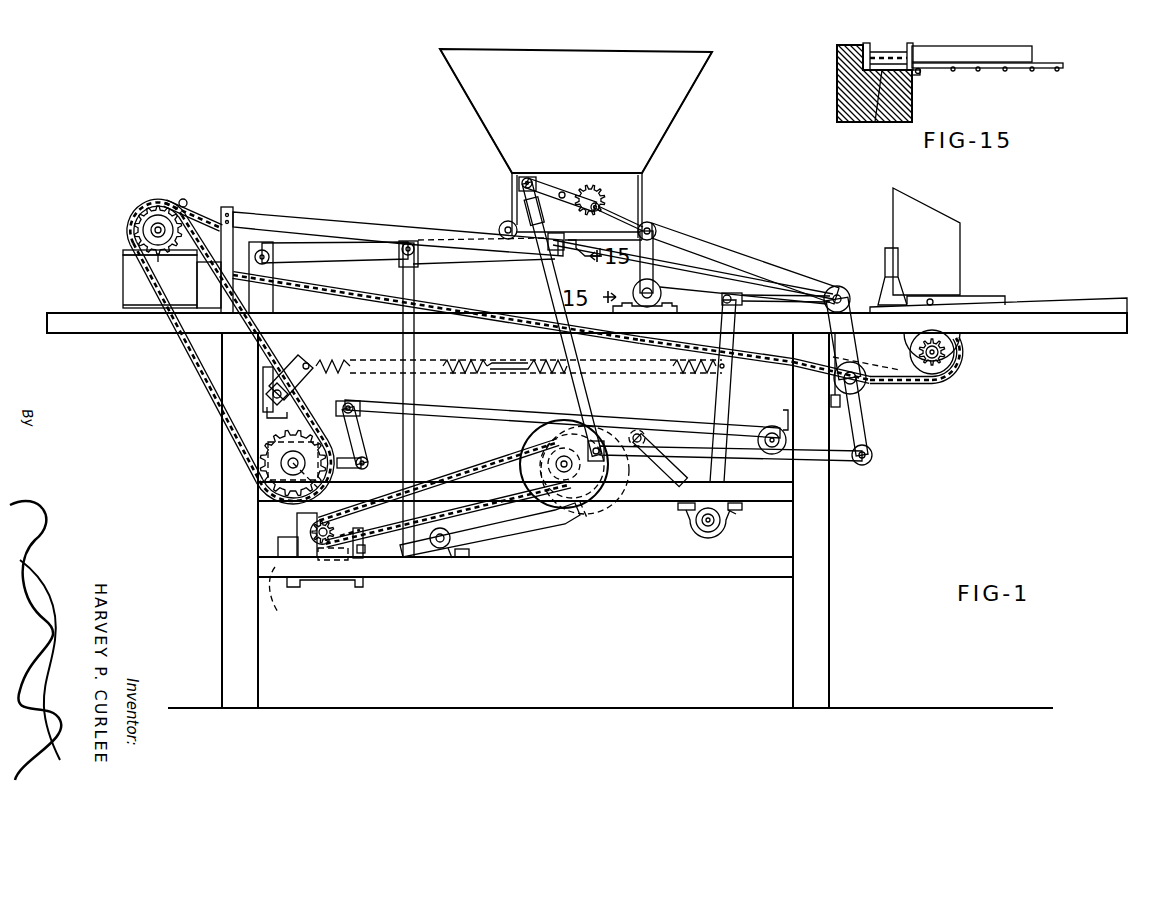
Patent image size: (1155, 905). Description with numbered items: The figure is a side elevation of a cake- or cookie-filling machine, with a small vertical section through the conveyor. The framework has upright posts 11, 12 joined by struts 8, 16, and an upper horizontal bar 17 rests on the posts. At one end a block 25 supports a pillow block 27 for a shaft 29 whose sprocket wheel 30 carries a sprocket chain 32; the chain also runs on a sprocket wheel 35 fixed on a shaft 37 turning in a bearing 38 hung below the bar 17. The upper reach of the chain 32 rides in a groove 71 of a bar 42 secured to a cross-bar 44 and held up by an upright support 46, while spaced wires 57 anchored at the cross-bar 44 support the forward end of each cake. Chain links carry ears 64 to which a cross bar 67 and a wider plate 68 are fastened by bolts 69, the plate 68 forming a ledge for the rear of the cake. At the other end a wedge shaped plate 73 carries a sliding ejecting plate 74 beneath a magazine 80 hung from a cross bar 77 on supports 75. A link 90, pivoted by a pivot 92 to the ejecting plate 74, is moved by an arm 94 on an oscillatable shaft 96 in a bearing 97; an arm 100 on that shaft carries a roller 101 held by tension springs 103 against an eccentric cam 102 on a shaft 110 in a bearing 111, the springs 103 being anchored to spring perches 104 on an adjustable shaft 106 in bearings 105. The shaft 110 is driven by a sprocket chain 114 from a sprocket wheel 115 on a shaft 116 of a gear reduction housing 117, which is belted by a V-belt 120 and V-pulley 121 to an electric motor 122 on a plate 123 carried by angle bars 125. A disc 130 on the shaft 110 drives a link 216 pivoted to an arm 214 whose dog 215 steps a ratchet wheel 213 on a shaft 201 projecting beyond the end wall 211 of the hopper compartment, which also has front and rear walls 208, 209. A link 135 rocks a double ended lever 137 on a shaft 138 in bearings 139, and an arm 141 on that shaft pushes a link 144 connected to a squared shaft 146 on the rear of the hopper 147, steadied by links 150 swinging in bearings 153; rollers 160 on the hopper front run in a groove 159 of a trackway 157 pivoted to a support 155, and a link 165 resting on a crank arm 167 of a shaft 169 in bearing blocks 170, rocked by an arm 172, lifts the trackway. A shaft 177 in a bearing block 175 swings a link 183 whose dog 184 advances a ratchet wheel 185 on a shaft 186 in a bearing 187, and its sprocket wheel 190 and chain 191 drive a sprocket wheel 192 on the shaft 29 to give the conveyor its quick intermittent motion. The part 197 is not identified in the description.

In FIG. 1, the strut 8 is at (652, 493).
In FIG. 1, the upright post 11 is at (222, 612).
In FIG. 1, the upright post 12 is at (830, 548).
In FIG. 1, the strut 16 is at (668, 572).
In FIG. 1, the upper horizontal bar 17 is at (68, 316).
In FIG. 1, the block 25 is at (125, 266).
In FIG. 1, the pillow block 27 is at (127, 250).
In FIG. 1, the shaft 29 is at (146, 218).
In FIG. 1, the sprocket wheel 30 is at (182, 202).
In FIG. 1, the sprocket chain 32 is at (200, 210).
In FIG. 15, the sprocket chain 32 is at (877, 44).
In FIG. 1, the sprocket wheel 35 is at (942, 392).
In FIG. 1, the shaft 37 is at (918, 355).
In FIG. 1, the bearing 38 is at (962, 357).
In FIG. 1, the bar 42 is at (280, 224).
In FIG. 15, the bar 42 is at (837, 100).
In FIG. 1, the cross-bar 44 is at (228, 209).
In FIG. 1, the upright support 46 is at (222, 262).
In FIG. 15, the wires 57 is at (955, 72).
In FIG. 15, the ears 64 is at (920, 74).
In FIG. 15, the cross bar 67 is at (1030, 53).
In FIG. 15, the plate 68 is at (1064, 67).
In FIG. 15, the bolts 69 is at (917, 77).
In FIG. 15, the groove 71 is at (879, 124).
In FIG. 1, the wedge shaped plate 73 is at (1048, 306).
In FIG. 1, the ejecting plate 74 is at (1000, 297).
In FIG. 1, the support 75 is at (896, 276).
In FIG. 1, the cross bar 77 is at (884, 264).
In FIG. 1, the magazine 80 is at (960, 255).
In FIG. 1, the link 90 is at (838, 286).
In FIG. 1, the pivot 92 is at (928, 299).
In FIG. 1, the arm 94 is at (728, 396).
In FIG. 1, the oscillatable shaft 96 is at (700, 522).
In FIG. 1, the bearing 97 is at (730, 514).
In FIG. 1, the arm 100 is at (656, 466).
In FIG. 1, the roller 101 is at (639, 430).
In FIG. 1, the eccentric cam 102 is at (594, 500).
In FIG. 1, the tension springs 103 is at (444, 364).
In FIG. 1, the spring perches 104 is at (306, 360).
In FIG. 1, the bearings 105 is at (264, 380).
In FIG. 1, the shaft 106 is at (268, 396).
In FIG. 1, the shaft 110 is at (562, 455).
In FIG. 1, the bearing 111 is at (518, 466).
In FIG. 1, the sprocket chain 114 is at (452, 474).
In FIG. 1, the sprocket wheel 115 is at (356, 526).
In FIG. 1, the shaft 116 is at (338, 554).
In FIG. 1, the gear reduction housing 117 is at (324, 518).
In FIG. 1, the V-belt 120 is at (358, 575).
In FIG. 1, the V-pulley 121 is at (378, 572).
In FIG. 1, the electric motor 122 is at (297, 532).
In FIG. 1, the plate 123 is at (276, 604).
In FIG. 1, the angle bars 125 is at (324, 586).
In FIG. 1, the disc 130 is at (588, 512).
In FIG. 1, the link 135 is at (842, 462).
In FIG. 1, the double ended lever 137 is at (868, 440).
In FIG. 1, the shaft 138 is at (862, 385).
In FIG. 1, the bearings 139 is at (832, 396).
In FIG. 1, the arm 141 is at (850, 328).
In FIG. 1, the link 144 is at (742, 266).
In FIG. 1, the squared shaft 146 is at (650, 223).
In FIG. 1, the hopper 147 is at (496, 166).
In FIG. 1, the links 150 is at (654, 280).
In FIG. 1, the bearings 153 is at (730, 296).
In FIG. 1, the support 155 is at (268, 294).
In FIG. 1, the trackway 157 is at (358, 248).
In FIG. 1, the groove 159 is at (446, 238).
In FIG. 1, the rollers 160 is at (507, 222).
In FIG. 1, the link 165 is at (412, 400).
In FIG. 1, the crank arm 167 is at (432, 546).
In FIG. 1, the shaft 169 is at (462, 557).
In FIG. 1, the bearing blocks 170 is at (452, 560).
In FIG. 1, the arm 172 is at (504, 530).
In FIG. 1, the bearing block 175 is at (848, 452).
In FIG. 1, the oscillatable shaft 177 is at (773, 426).
In FIG. 1, the link 183 is at (358, 442).
In FIG. 1, the dog 184 is at (362, 470).
In FIG. 1, the ratchet wheel 185 is at (340, 410).
In FIG. 1, the shaft 186 is at (276, 496).
In FIG. 1, the bearing 187 is at (258, 457).
In FIG. 1, the sprocket wheel 190 is at (266, 478).
In FIG. 1, the sprocket chain 191 is at (202, 384).
In FIG. 1, the sprocket wheel 192 is at (162, 275).
In FIG. 1, the notch 197 is at (590, 270).
In FIG. 1, the shaft 201 is at (632, 200).
In FIG. 1, the front wall 208 is at (490, 130).
In FIG. 1, the rear wall 209 is at (656, 160).
In FIG. 1, the end wall 211 is at (610, 60).
In FIG. 1, the ratchet wheel 213 is at (598, 188).
In FIG. 1, the arm 214 is at (527, 178).
In FIG. 1, the dog 215 is at (576, 195).
In FIG. 1, the link 216 is at (553, 289).